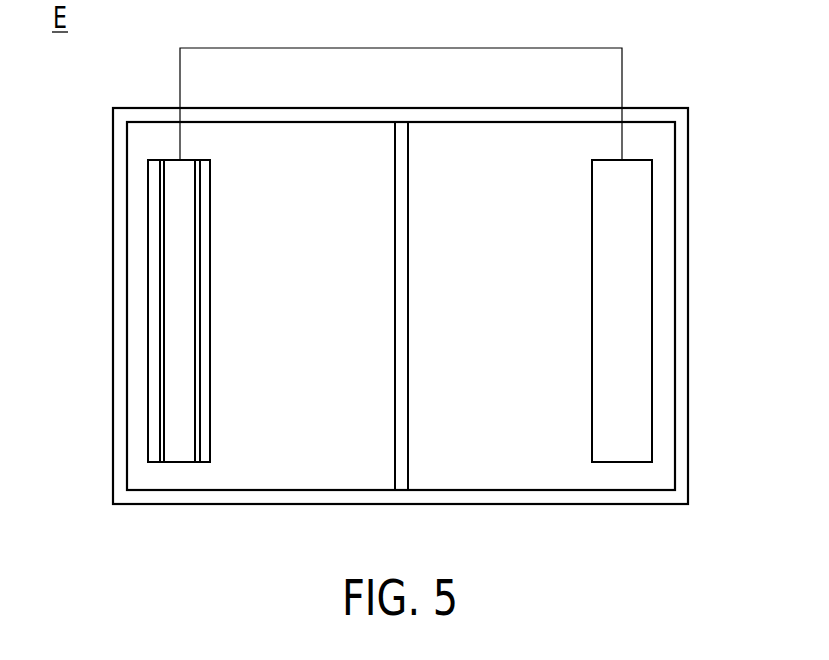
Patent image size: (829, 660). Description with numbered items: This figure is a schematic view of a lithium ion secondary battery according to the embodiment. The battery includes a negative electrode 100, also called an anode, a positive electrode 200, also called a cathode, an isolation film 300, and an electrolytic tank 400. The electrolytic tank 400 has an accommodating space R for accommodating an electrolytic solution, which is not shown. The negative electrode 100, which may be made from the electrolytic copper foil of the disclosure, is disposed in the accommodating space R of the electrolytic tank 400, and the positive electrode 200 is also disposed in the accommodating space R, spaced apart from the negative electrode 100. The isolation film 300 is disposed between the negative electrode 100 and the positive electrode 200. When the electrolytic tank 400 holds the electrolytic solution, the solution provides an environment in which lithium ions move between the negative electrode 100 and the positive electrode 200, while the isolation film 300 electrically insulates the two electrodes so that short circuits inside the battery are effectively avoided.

The negative electrode 100 is at (182, 464).
The positive electrode 200 is at (618, 464).
The isolation film 300 is at (409, 464).
The electrolytic tank 400 is at (657, 106).
The accommodating space R is at (282, 176).